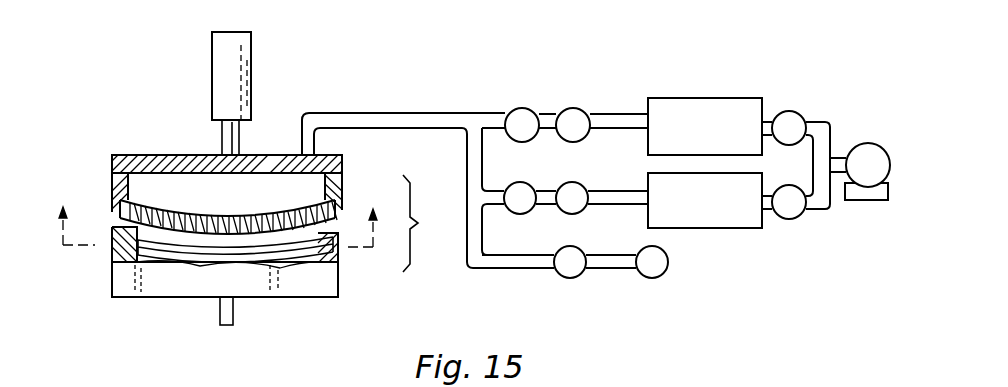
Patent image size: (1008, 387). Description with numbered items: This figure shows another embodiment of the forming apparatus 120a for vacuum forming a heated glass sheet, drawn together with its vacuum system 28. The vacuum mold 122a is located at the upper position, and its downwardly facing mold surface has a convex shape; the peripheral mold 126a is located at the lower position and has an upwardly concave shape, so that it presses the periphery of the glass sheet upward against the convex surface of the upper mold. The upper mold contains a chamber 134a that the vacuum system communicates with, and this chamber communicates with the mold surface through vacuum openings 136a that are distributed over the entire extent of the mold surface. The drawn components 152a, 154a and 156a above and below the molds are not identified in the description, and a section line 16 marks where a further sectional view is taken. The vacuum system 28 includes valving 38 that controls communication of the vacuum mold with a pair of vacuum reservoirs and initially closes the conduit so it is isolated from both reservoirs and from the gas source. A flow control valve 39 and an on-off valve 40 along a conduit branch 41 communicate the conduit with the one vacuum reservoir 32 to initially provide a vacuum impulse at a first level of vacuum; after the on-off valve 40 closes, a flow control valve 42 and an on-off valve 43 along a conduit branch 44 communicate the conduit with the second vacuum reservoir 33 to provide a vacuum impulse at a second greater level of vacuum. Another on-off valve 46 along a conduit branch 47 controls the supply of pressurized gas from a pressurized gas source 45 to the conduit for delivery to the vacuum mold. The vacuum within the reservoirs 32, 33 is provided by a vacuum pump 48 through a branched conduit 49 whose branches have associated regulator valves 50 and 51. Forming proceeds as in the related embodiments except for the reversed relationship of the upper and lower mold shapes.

The forming apparatus 120a is at (205, 189).
The vacuum mold 122a is at (104, 175).
The peripheral mold 126a is at (108, 284).
The chamber 134a is at (140, 180).
The vacuum openings 136a is at (272, 214).
The lower shaft 152a is at (235, 308).
The hydraulic cylinder 154a is at (252, 57).
The piston rod 156a is at (240, 135).
The section line 16- 16 is at (217, 250).
The vacuum system 28 is at (596, 170).
The vacuum reservoir 32 is at (711, 98).
The second vacuum reservoir 33 is at (719, 229).
The valving 38 is at (517, 98).
The flow control valve 39 is at (511, 111).
The on-off valve 40 is at (583, 110).
The conduit branch 41 is at (618, 116).
The flow control valve 42 is at (510, 186).
The on-off valve 43 is at (571, 184).
The conduit branch 44 is at (614, 191).
The pressurized gas source 45 is at (656, 279).
The on-off valve 46 is at (573, 279).
The conduit branch 47 is at (499, 270).
The vacuum pump 48 is at (879, 130).
The branched conduit 49 is at (831, 156).
The regulator valve 50 is at (794, 112).
The regulator valve 51 is at (796, 219).